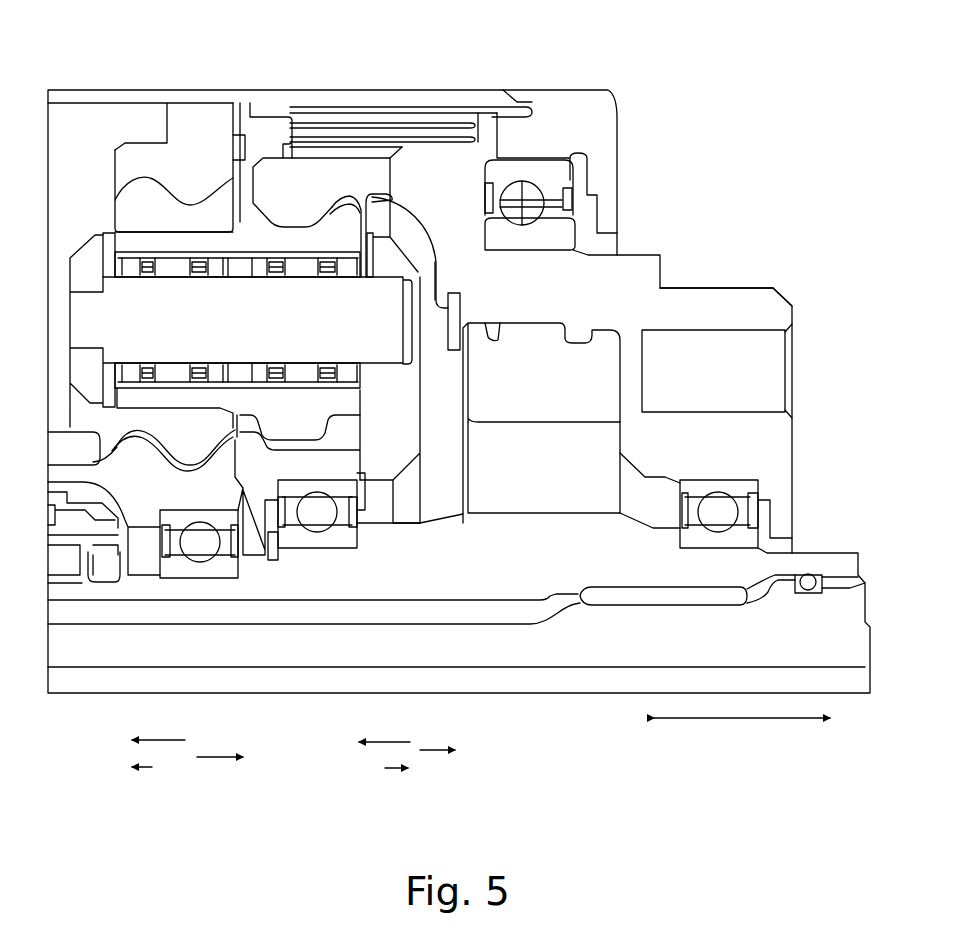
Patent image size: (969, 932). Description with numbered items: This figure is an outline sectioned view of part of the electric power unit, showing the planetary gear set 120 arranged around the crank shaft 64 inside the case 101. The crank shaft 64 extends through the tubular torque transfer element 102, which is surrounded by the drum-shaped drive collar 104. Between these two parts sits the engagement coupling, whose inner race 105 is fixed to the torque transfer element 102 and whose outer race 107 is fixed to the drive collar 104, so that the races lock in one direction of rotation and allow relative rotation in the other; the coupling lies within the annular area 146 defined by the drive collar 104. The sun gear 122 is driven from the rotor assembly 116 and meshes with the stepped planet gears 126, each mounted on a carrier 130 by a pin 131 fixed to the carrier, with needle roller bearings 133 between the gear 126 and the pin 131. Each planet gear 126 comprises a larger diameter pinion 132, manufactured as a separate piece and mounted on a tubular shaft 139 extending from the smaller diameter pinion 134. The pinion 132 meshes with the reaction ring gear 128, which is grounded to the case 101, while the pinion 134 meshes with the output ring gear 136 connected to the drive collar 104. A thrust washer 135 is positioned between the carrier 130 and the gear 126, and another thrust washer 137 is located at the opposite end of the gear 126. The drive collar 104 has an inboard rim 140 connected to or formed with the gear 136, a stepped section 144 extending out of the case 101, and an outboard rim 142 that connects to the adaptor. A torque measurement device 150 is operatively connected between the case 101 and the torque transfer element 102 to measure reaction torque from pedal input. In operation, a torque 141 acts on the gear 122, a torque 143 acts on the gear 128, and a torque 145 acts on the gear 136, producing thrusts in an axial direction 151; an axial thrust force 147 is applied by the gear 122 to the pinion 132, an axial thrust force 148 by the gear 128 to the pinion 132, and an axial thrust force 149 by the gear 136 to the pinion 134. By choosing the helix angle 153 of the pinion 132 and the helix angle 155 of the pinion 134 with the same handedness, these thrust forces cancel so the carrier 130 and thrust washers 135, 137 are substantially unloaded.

The crank shaft 64 is at (740, 654).
The case 101 is at (110, 137).
The torque transfer element 102 is at (626, 573).
The drive collar 104 is at (640, 300).
The inner race 105 is at (564, 479).
The outer race 107 is at (563, 384).
The rotor assembly 116 is at (97, 460).
The gear set 120 is at (232, 102).
The gear 122 is at (182, 492).
The gears 126 is at (247, 216).
The gear 128 is at (224, 157).
The carrier 130 is at (403, 413).
The pin 131 is at (272, 336).
The pinion 132 is at (170, 220).
The needle roller bearings 133 is at (183, 273).
The pinion 134 is at (355, 251).
The thrust washer 135 is at (110, 237).
The gear 136 is at (319, 191).
The thrust washer 137 is at (370, 255).
The tubular shaft 139 is at (212, 254).
The inboard rim 140 is at (362, 152).
The torque 141 is at (150, 768).
The outboard rim 142 is at (794, 310).
The torque 143 is at (160, 740).
The stepped section 144 is at (707, 307).
The torque 145 is at (215, 758).
The annular area 146 is at (500, 338).
The axial thrust force 147 is at (392, 770).
The axial thrust force 148 is at (383, 742).
The axial thrust force 149 is at (428, 752).
The torque measurement device 150 is at (93, 530).
The axial direction 151 is at (752, 719).
The helix angle 153 is at (147, 175).
The helix angle 155 is at (327, 205).